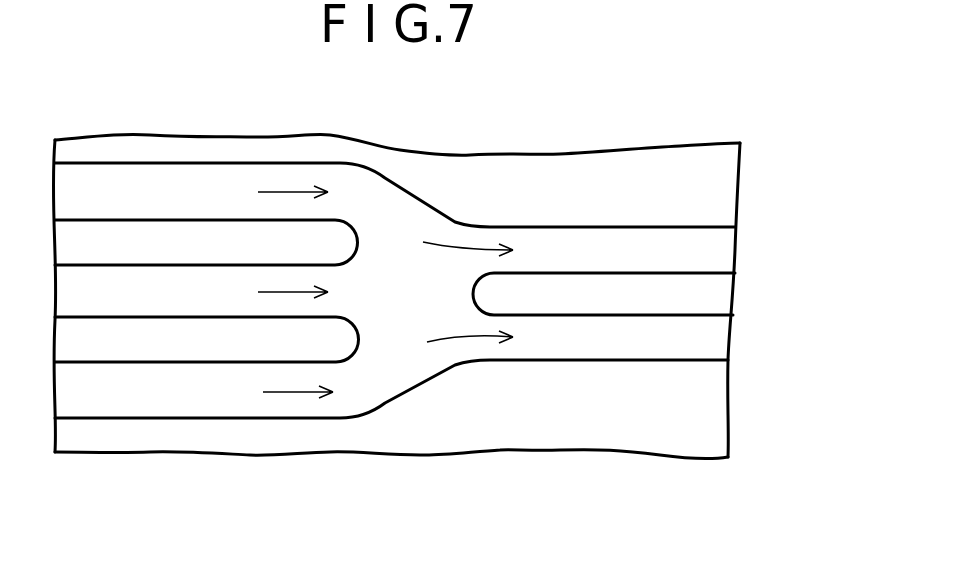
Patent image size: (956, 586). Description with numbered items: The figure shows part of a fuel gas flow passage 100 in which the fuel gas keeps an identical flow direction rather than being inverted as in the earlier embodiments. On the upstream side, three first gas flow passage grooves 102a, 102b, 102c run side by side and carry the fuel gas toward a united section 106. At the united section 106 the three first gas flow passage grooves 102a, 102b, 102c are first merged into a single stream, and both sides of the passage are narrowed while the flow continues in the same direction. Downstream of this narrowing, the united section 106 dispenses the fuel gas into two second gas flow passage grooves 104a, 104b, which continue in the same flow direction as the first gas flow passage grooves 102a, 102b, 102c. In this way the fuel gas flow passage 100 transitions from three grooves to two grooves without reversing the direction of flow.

The fuel gas flow passage 100 is at (527, 185).
The first gas flow passage groove 102a is at (235, 183).
The first gas flow passage groove 102b is at (262, 258).
The first gas flow passage groove 102c is at (228, 398).
The second gas flow passage groove 104a is at (640, 210).
The second gas flow passage groove 104b is at (577, 340).
The united section 106 is at (402, 310).